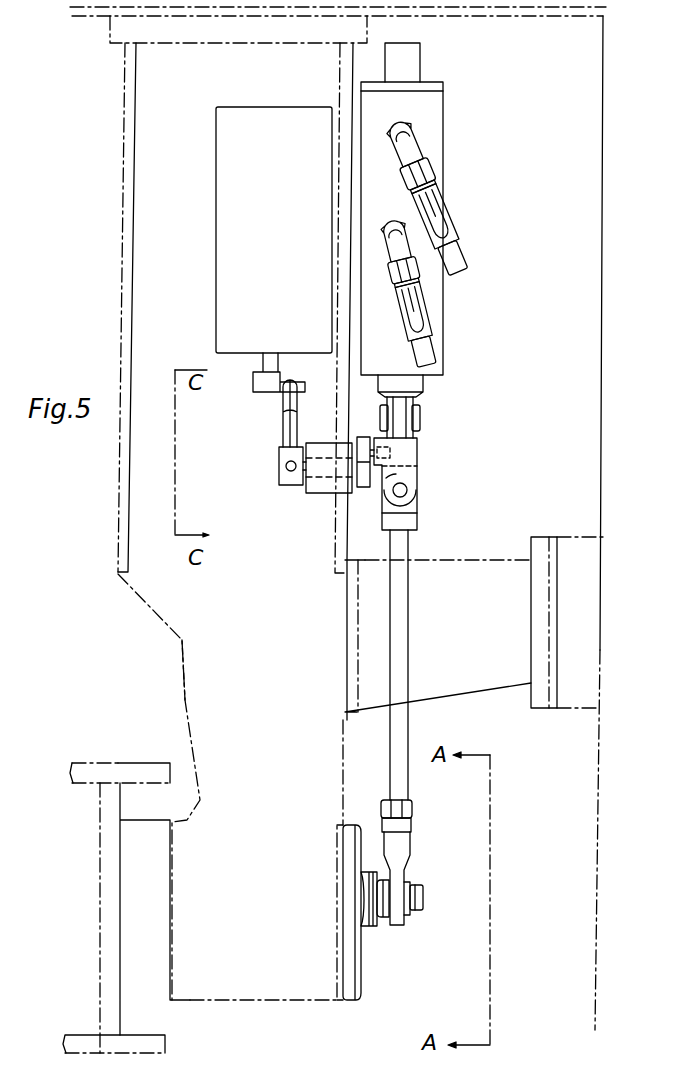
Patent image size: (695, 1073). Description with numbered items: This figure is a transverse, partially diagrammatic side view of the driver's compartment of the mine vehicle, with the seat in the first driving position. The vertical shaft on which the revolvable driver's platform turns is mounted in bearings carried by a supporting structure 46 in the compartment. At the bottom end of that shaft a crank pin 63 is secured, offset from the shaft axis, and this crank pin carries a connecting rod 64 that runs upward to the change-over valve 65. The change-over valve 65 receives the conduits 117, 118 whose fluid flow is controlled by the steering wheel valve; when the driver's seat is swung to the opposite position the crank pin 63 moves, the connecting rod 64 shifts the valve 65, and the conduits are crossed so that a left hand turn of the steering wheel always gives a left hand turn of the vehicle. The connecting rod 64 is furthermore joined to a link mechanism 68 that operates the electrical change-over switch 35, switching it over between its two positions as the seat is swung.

The change-over switch 35 is at (230, 158).
The change-over valve 65 is at (436, 151).
The conduit 118 is at (460, 260).
The conduit 117 is at (432, 362).
The link mechanism 68 is at (291, 485).
The supporting structure 46 is at (237, 765).
The connecting rod 64 is at (400, 778).
The crank pin 63 is at (425, 900).